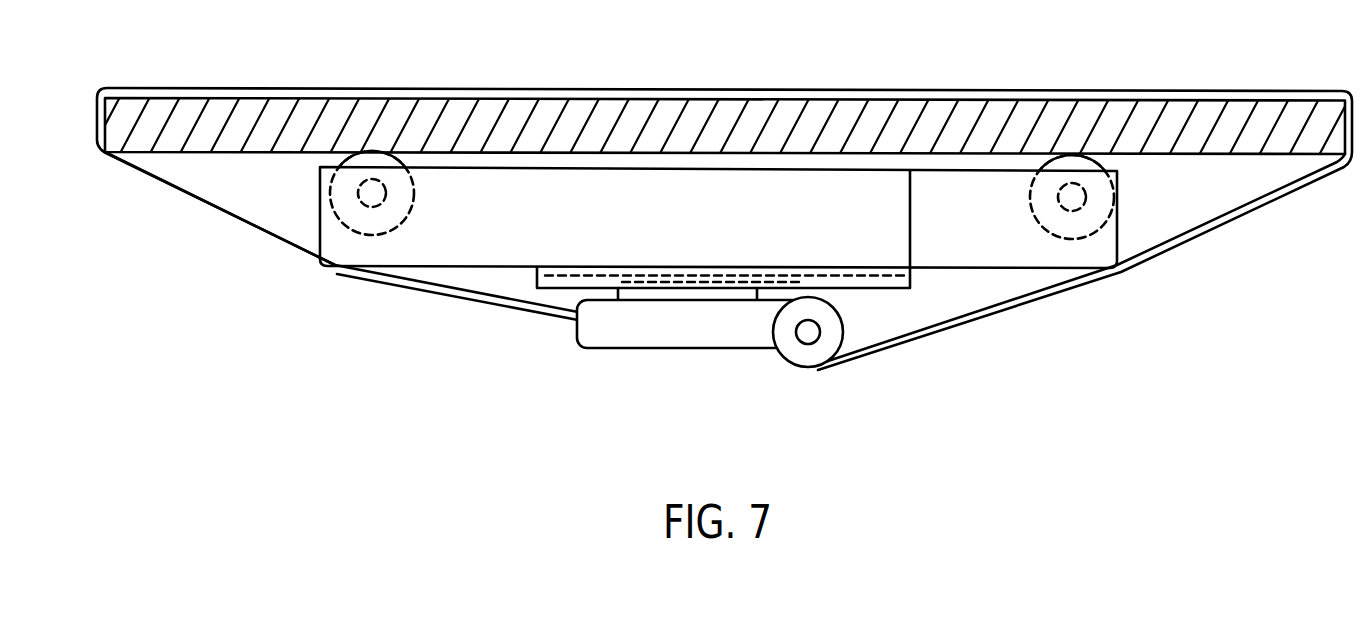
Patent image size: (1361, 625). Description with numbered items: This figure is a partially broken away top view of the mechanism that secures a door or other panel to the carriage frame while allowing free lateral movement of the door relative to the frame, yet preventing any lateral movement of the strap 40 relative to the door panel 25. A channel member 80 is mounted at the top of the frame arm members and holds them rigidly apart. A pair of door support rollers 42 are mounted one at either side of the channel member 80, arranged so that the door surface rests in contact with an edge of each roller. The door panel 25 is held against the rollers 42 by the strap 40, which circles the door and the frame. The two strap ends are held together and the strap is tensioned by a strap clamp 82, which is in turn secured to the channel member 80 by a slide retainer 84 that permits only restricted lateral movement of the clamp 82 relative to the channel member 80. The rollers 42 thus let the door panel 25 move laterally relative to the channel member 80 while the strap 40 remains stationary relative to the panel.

The door panel 25 is at (683, 118).
The strap 40 is at (913, 92).
The door support rollers 42 is at (362, 158).
The channel member 80 is at (500, 233).
The strap clamp 82 is at (730, 328).
The slide retainer 84 is at (883, 287).